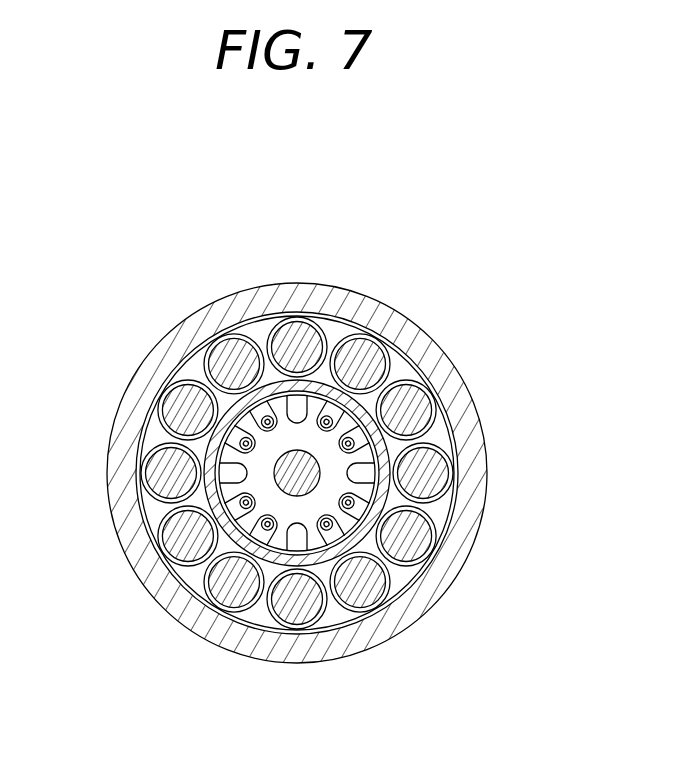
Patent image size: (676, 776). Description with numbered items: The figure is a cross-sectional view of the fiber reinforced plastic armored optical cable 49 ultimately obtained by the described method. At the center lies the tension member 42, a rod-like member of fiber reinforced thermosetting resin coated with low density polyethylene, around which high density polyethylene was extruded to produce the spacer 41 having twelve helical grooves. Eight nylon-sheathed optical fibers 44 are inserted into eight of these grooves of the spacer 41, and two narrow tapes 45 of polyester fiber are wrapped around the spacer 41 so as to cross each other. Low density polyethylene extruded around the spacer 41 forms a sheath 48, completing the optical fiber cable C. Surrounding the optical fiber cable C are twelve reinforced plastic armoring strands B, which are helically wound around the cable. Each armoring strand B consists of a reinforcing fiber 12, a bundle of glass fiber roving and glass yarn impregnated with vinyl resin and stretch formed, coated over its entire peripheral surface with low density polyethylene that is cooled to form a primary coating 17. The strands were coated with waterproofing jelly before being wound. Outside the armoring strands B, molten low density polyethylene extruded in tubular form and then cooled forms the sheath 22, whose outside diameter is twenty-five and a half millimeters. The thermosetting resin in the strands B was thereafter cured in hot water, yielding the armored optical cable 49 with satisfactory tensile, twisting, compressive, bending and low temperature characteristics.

The primary coating 17 is at (207, 340).
The reinforcing fiber 12 is at (236, 331).
The armoring strand B is at (298, 300).
The sheath 48 is at (334, 340).
The optical fiber cable C is at (393, 358).
The sheath 22 is at (463, 407).
The fiber reinforced plastic armored optical cable 49 is at (497, 495).
The narrow tape 45 is at (217, 403).
The tension member 42 is at (274, 471).
The spacer 41 is at (261, 503).
The optical fiber 44 is at (232, 550).